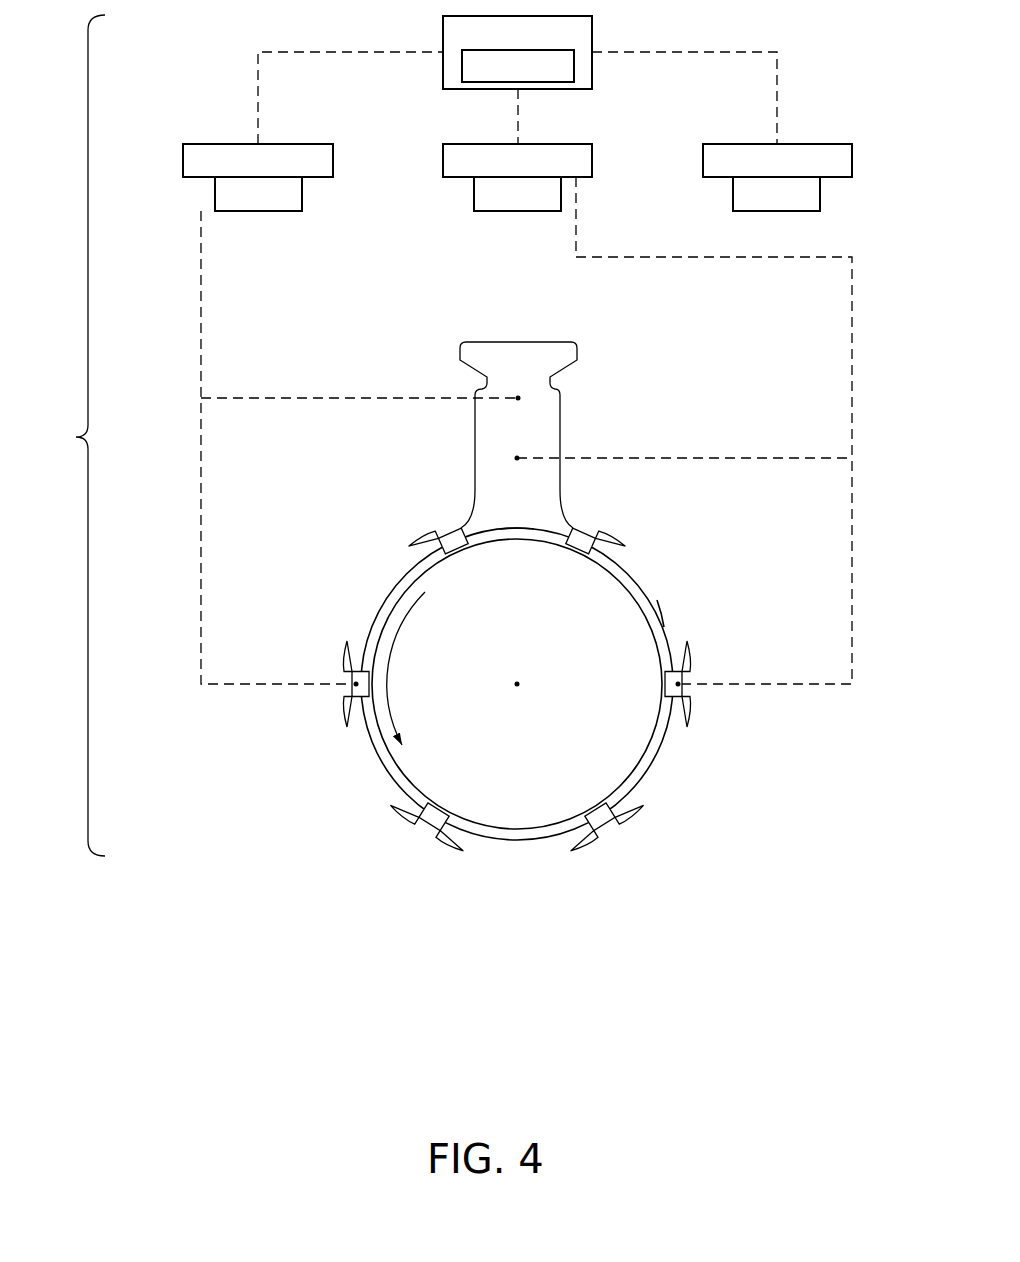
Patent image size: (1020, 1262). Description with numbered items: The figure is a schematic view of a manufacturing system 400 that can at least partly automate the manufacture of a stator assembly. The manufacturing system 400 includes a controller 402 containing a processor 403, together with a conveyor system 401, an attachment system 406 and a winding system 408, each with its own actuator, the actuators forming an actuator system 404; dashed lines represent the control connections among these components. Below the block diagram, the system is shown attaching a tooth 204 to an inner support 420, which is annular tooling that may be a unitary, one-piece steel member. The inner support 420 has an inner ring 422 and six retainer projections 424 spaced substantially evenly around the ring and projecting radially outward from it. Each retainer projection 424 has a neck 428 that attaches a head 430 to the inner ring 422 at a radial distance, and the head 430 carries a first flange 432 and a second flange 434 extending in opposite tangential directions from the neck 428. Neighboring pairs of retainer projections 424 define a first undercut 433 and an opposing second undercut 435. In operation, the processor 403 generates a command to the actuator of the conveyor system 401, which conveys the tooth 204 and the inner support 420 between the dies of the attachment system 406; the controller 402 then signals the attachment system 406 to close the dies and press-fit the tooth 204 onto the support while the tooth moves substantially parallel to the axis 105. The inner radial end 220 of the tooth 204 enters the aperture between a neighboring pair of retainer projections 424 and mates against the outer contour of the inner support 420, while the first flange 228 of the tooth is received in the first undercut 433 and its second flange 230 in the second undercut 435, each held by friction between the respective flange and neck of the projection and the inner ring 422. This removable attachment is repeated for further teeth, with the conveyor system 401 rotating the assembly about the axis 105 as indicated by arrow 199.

The manufacturing system 400 is at (435, 435).
The conveyor system 401 is at (240, 138).
The controller 402 is at (443, 38).
The processor 403 is at (563, 83).
The actuator system 404 is at (858, 180).
The attachment system 406 is at (485, 138).
The winding system 408 is at (833, 140).
The tooth 204 is at (543, 447).
The first flange of the tooth 228 is at (455, 532).
The second flange of the tooth 230 is at (580, 532).
The inner radial end 220 is at (517, 521).
The inner support 420 is at (660, 598).
The inner ring 422 is at (664, 628).
The retainer projections 424 is at (438, 532).
The axis 105 is at (517, 683).
The arrow 199 is at (388, 683).
The first undercut 433 is at (679, 718).
The neck 428 is at (421, 820).
The first flange 432 is at (424, 823).
The head 430 is at (428, 835).
The second flange 434 is at (462, 850).
The second undercut 435 is at (612, 818).